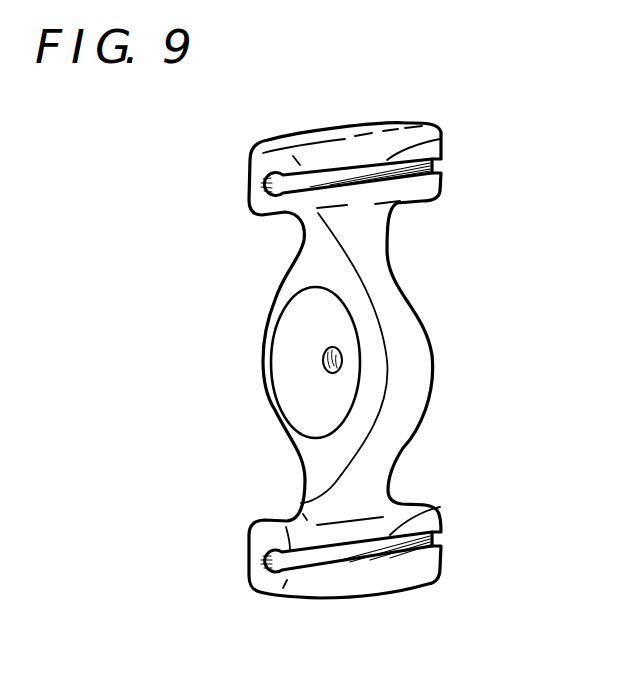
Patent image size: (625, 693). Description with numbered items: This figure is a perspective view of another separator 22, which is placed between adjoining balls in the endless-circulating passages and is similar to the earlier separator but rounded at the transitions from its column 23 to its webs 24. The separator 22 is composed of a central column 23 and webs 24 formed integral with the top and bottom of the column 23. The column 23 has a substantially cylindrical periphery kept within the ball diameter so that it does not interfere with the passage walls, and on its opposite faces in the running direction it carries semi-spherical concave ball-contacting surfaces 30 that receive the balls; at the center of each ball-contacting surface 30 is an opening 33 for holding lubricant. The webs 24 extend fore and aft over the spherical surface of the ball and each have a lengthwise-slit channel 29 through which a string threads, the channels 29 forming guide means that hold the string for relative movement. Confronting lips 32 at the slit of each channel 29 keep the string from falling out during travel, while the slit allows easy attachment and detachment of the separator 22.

The separator 22 is at (436, 253).
The column 23 is at (405, 368).
The web 24 is at (370, 134).
The channel 29 is at (327, 180).
The ball-contacting surface 30 is at (297, 368).
The lip 32 is at (441, 140).
The opening 33 is at (321, 354).